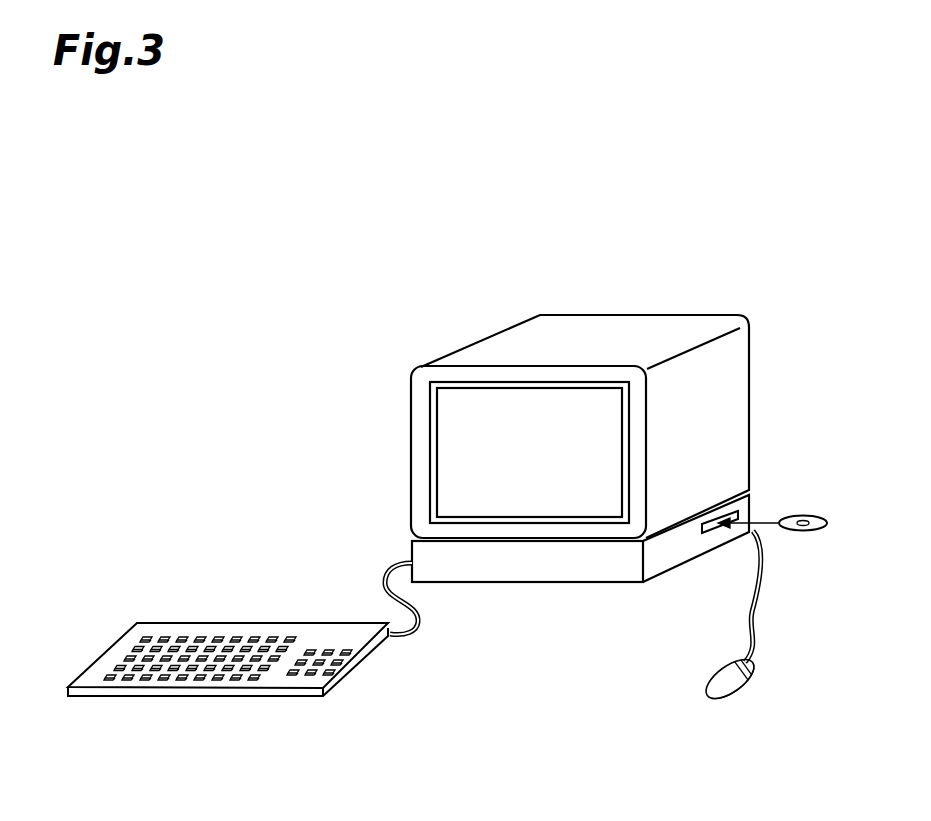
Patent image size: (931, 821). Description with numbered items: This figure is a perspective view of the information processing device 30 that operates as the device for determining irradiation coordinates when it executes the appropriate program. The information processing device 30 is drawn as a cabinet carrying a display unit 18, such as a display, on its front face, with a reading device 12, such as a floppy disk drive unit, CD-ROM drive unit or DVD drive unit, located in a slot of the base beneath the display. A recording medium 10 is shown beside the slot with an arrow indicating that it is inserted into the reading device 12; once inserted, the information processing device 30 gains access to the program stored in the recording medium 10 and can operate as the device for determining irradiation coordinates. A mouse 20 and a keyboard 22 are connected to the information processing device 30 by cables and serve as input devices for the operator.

The information processing device 30 is at (519, 307).
The display unit 18 is at (453, 412).
The reading device 12 is at (716, 534).
The recording medium 10 is at (805, 531).
The mouse 20 is at (718, 698).
The keyboard 22 is at (243, 622).